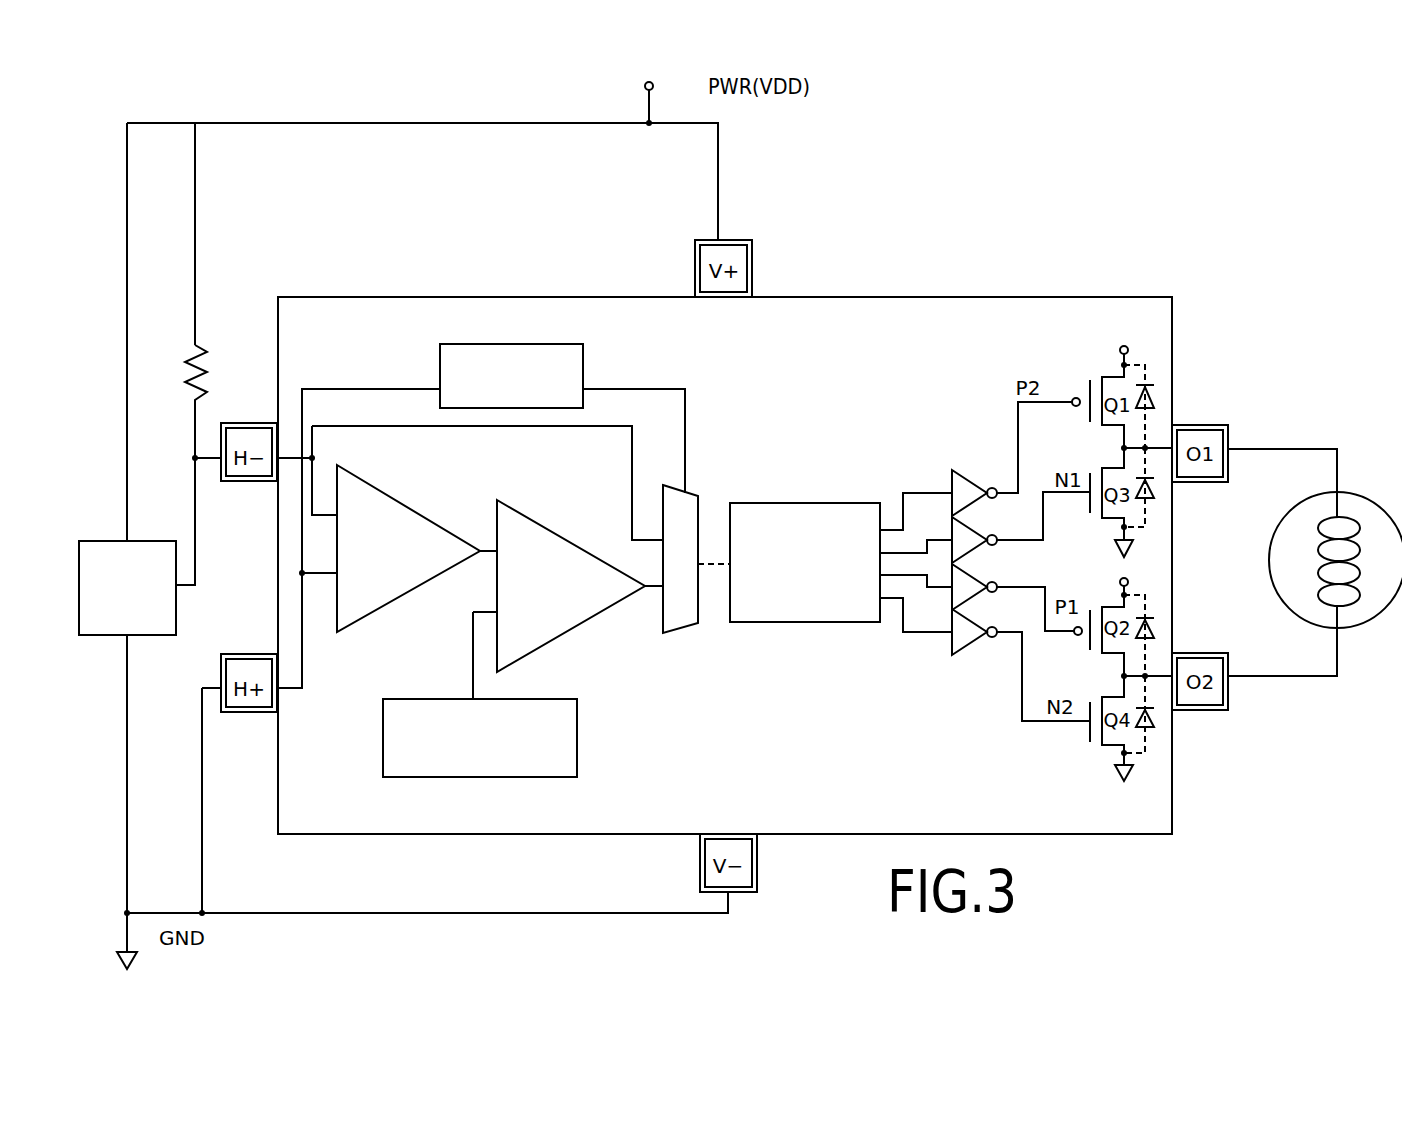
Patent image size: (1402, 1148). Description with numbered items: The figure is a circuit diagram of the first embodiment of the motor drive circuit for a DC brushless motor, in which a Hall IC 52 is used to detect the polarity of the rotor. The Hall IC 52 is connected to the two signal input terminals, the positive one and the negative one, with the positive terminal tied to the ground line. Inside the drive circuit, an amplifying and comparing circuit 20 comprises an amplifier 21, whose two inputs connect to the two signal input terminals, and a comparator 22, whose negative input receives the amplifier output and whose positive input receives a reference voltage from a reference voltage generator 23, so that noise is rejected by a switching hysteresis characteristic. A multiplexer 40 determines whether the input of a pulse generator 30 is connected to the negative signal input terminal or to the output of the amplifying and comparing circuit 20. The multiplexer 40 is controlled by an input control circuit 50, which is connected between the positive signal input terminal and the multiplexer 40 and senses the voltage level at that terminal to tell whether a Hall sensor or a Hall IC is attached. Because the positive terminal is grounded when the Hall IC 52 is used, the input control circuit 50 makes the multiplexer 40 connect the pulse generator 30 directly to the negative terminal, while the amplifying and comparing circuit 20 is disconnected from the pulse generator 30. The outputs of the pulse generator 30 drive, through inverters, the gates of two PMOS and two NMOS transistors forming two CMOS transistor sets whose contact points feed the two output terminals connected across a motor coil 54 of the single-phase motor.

The amplifying and comparing circuit 20 is at (641, 689).
The amplifier 21 is at (418, 585).
The comparator 22 is at (608, 603).
The reference voltage generator 23 is at (543, 777).
The pulse generator 30 is at (845, 622).
The multiplexer 40 is at (700, 623).
The input control circuit 50 is at (583, 361).
The Hall IC 52 is at (160, 636).
The motor coil 54 is at (1270, 572).